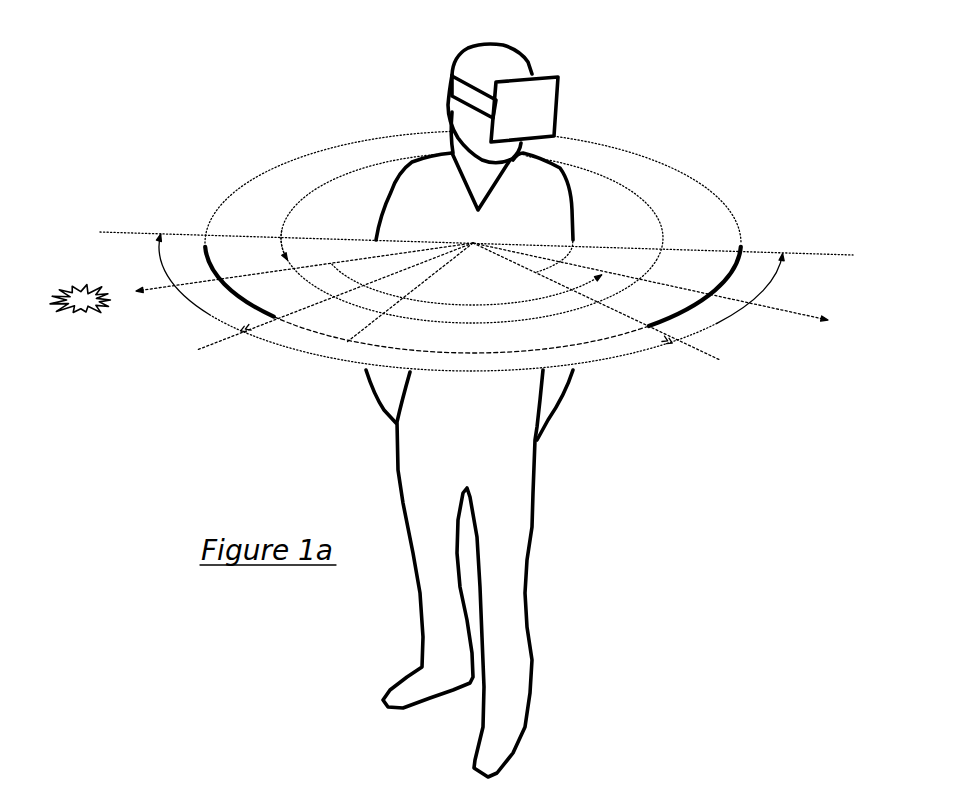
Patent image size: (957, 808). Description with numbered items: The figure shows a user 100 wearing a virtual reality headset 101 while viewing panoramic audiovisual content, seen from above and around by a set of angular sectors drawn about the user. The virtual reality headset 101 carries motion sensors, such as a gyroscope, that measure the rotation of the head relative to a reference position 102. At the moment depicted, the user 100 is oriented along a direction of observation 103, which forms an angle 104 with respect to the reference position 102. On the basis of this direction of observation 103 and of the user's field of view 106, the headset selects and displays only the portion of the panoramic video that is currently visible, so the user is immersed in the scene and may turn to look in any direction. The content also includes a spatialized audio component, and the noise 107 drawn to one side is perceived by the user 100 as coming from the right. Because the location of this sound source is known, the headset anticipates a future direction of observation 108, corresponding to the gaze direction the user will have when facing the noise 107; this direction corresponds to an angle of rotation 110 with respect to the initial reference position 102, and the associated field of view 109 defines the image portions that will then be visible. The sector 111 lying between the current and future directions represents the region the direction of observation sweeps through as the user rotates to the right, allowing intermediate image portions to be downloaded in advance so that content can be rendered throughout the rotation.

The user 100 is at (513, 53).
The virtual reality headset 101 is at (566, 86).
The reference position 102 is at (378, 317).
The direction of observation 103 is at (791, 313).
The angle 104 is at (437, 303).
The field of view 106 is at (717, 323).
The noise 107 is at (70, 290).
The future direction of observation 108 is at (331, 262).
The field of view 109 is at (204, 313).
The angle of rotation 110 is at (661, 237).
The sector 111 is at (363, 368).